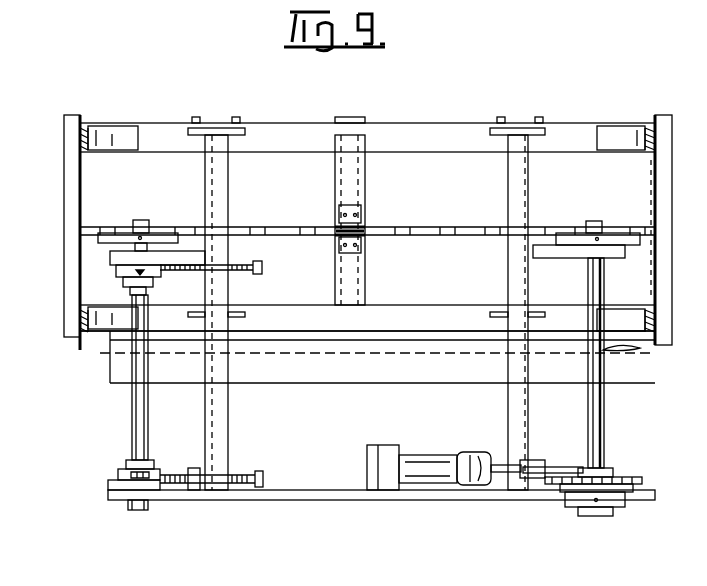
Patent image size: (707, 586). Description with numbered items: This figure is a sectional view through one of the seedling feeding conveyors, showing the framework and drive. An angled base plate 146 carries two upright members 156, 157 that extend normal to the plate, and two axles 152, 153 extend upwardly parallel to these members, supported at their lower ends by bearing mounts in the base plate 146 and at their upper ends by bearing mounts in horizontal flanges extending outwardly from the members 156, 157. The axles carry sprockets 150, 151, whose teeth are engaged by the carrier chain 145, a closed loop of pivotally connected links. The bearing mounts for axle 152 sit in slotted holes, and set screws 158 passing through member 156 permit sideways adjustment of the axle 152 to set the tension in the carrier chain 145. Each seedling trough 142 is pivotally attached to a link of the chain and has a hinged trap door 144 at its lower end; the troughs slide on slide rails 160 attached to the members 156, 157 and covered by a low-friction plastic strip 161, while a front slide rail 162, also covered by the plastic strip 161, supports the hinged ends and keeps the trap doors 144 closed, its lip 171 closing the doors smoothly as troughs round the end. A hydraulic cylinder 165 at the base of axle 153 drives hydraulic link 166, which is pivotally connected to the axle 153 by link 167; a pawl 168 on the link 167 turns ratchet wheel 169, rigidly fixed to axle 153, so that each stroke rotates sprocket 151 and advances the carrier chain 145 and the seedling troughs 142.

The seedling trough 142 is at (70, 180).
The hinged trap door 144 is at (68, 348).
The carrier chain 145 is at (376, 228).
The angled base plate 146 is at (348, 495).
The sprocket 150 is at (122, 230).
The sprocket 151 is at (578, 232).
The axle 152 is at (138, 412).
The axle 153 is at (606, 418).
The member 156 is at (220, 190).
The member 157 is at (505, 186).
The set screw 158 is at (258, 270).
The slide rail 160 is at (400, 124).
The plastic strip 161 is at (108, 128).
The slide rail 162 is at (395, 348).
The hydraulic cylinder 165 is at (442, 454).
The hydraulic link 166 is at (496, 455).
The link 167 is at (570, 466).
The pawl 168 is at (562, 504).
The ratchet wheel 169 is at (626, 480).
The lip 171 is at (606, 352).